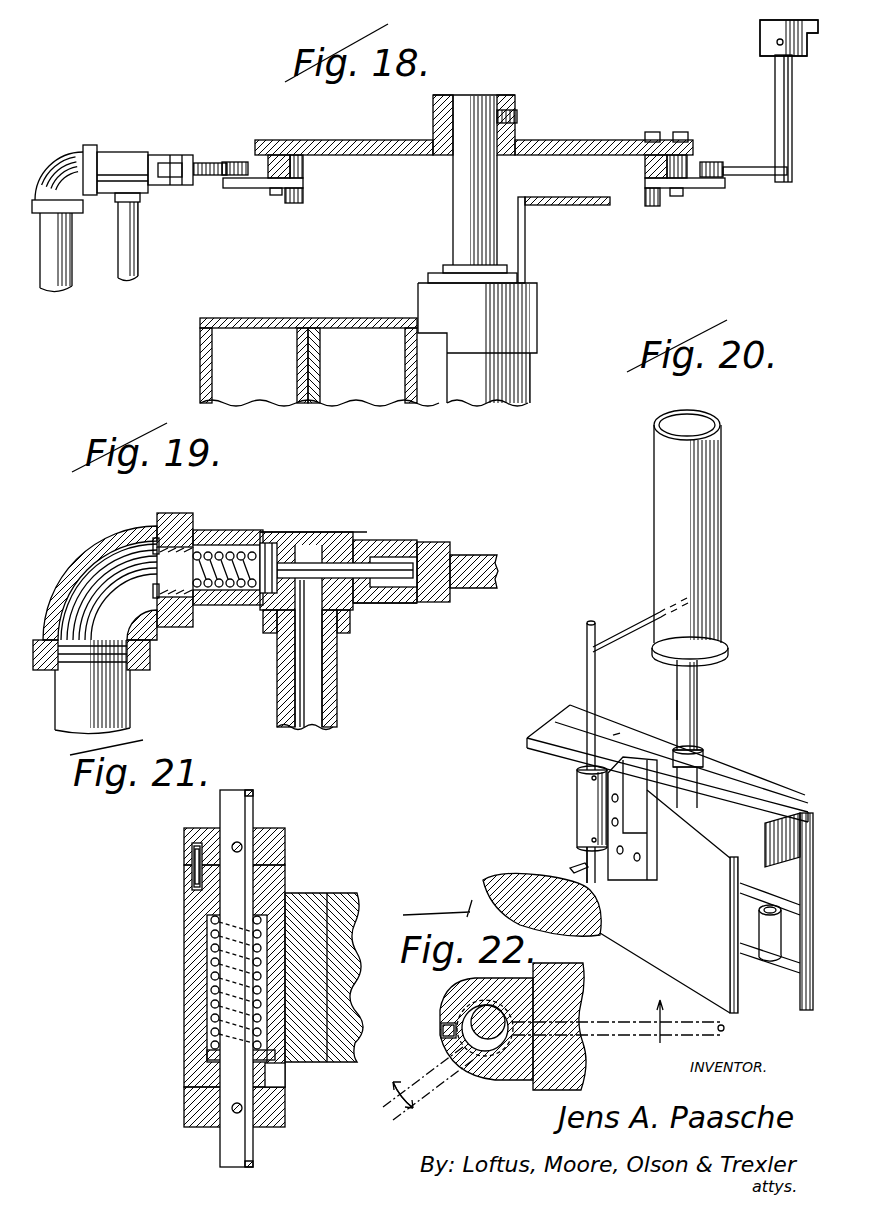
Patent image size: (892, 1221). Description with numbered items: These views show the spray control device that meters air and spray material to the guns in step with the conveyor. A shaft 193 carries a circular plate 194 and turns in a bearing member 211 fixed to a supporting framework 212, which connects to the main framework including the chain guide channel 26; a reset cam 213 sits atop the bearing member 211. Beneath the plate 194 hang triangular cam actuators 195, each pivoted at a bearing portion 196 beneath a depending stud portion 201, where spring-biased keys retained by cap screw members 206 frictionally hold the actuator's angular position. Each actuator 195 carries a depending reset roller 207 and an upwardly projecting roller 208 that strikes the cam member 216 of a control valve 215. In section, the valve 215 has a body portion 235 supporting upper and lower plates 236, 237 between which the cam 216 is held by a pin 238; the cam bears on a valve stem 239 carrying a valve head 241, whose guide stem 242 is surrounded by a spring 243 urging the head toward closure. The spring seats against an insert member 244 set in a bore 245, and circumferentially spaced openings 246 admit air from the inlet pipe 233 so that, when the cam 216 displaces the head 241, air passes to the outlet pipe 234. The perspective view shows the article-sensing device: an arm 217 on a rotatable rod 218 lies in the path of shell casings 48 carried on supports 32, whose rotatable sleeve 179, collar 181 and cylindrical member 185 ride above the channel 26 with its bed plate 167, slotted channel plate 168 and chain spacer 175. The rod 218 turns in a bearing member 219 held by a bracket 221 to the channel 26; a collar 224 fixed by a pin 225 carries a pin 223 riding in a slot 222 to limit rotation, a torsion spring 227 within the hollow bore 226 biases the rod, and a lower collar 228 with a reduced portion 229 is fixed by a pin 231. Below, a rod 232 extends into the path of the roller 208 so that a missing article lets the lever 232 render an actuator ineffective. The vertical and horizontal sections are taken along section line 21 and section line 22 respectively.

In FIG. 20, the section line 21 is at (608, 742).
In FIG. 21, the section line 22 is at (182, 865).
In FIG. 20, the chain guide channel 26 is at (743, 783).
In FIG. 20, the article support 32 is at (716, 711).
In FIG. 20, the shell casing 48 is at (707, 607).
In FIG. 20, the bottom bed plate 167 is at (747, 967).
In FIG. 20, the slotted channel plate 168 is at (747, 940).
In FIG. 20, the spacer 175 is at (787, 958).
In FIG. 20, the rotatable sleeve 179 is at (720, 753).
In FIG. 20, the collar 181 is at (720, 735).
In FIG. 20, the cylindrical member 185 is at (693, 682).
In FIG. 18, the shaft 193 is at (463, 215).
In FIG. 18, the circular plate 194 is at (547, 140).
In FIG. 20, the circular plate 194 is at (500, 876).
In FIG. 18, the cam actuator 195 is at (258, 190).
In FIG. 18, the bearing portion 196 is at (305, 172).
In FIG. 18, the depending stud portion 201 is at (303, 157).
In FIG. 18, the cap screw members 206 is at (680, 132).
In FIG. 18, the roller 207 is at (292, 203).
In FIG. 18, the roller 208 is at (232, 162).
In FIG. 20, the roller 208 is at (572, 868).
In FIG. 18, the bearing member 211 is at (527, 302).
In FIG. 18, the supporting framework 212 is at (345, 320).
In FIG. 18, the reset cam 213 is at (527, 248).
In FIG. 18, the control valve 215 is at (176, 144).
In FIG. 19, the control valve 215 is at (371, 522).
In FIG. 18, the cam member 216 is at (210, 175).
In FIG. 19, the cam member 216 is at (463, 553).
In FIG. 20, the arm 217 is at (637, 620).
In FIG. 22, the arm 217 is at (605, 1027).
In FIG. 18, the rotatable shaft 218 is at (778, 72).
In FIG. 20, the rotatable shaft 218 is at (587, 667).
In FIG. 21, the rotatable shaft 218 is at (252, 793).
In FIG. 18, the bearing member 219 is at (765, 20).
In FIG. 20, the bearing member 219 is at (577, 808).
In FIG. 21, the bearing member 219 is at (195, 985).
In FIG. 22, the bearing member 219 is at (527, 1078).
In FIG. 20, the bracket 221 is at (660, 812).
In FIG. 21, the annular slot 222 is at (192, 888).
In FIG. 22, the annular slot 222 is at (467, 1065).
In FIG. 21, the pin 223 is at (192, 877).
In FIG. 22, the pin 223 is at (441, 1030).
In FIG. 21, the collar 224 is at (205, 830).
In FIG. 21, the pin 225 is at (240, 842).
In FIG. 21, the hollow bore 226 is at (215, 942).
In FIG. 21, the torsion spring 227 is at (215, 1025).
In FIG. 22, the torsion spring 227 is at (462, 1005).
In FIG. 18, the collar 228 is at (760, 40).
In FIG. 21, the collar 228 is at (184, 1107).
In FIG. 21, the reduced portion 229 is at (265, 1080).
In FIG. 21, the pin 231 is at (243, 1108).
In FIG. 18, the rod 232 is at (745, 165).
In FIG. 20, the rod 232 is at (580, 860).
In FIG. 22, the rod 232 is at (392, 1110).
In FIG. 18, the inlet conduit 233 is at (62, 292).
In FIG. 19, the inlet conduit 233 is at (110, 703).
In FIG. 18, the outlet conduit 234 is at (135, 266).
In FIG. 19, the outlet conduit 234 is at (310, 700).
In FIG. 18, the body portion 235 is at (112, 152).
In FIG. 19, the body portion 235 is at (360, 613).
In FIG. 19, the upper plate 236 is at (400, 543).
In FIG. 19, the lower plate 237 is at (397, 600).
In FIG. 19, the pin 238 is at (433, 603).
In FIG. 19, the valve stem 239 is at (340, 562).
In FIG. 19, the valve head 241 is at (263, 540).
In FIG. 19, the guide stem 242 is at (213, 560).
In FIG. 19, the spring 243 is at (213, 590).
In FIG. 19, the bearing support member 244 is at (117, 573).
In FIG. 19, the bore 245 is at (233, 590).
In FIG. 19, the passages 246 is at (157, 540).